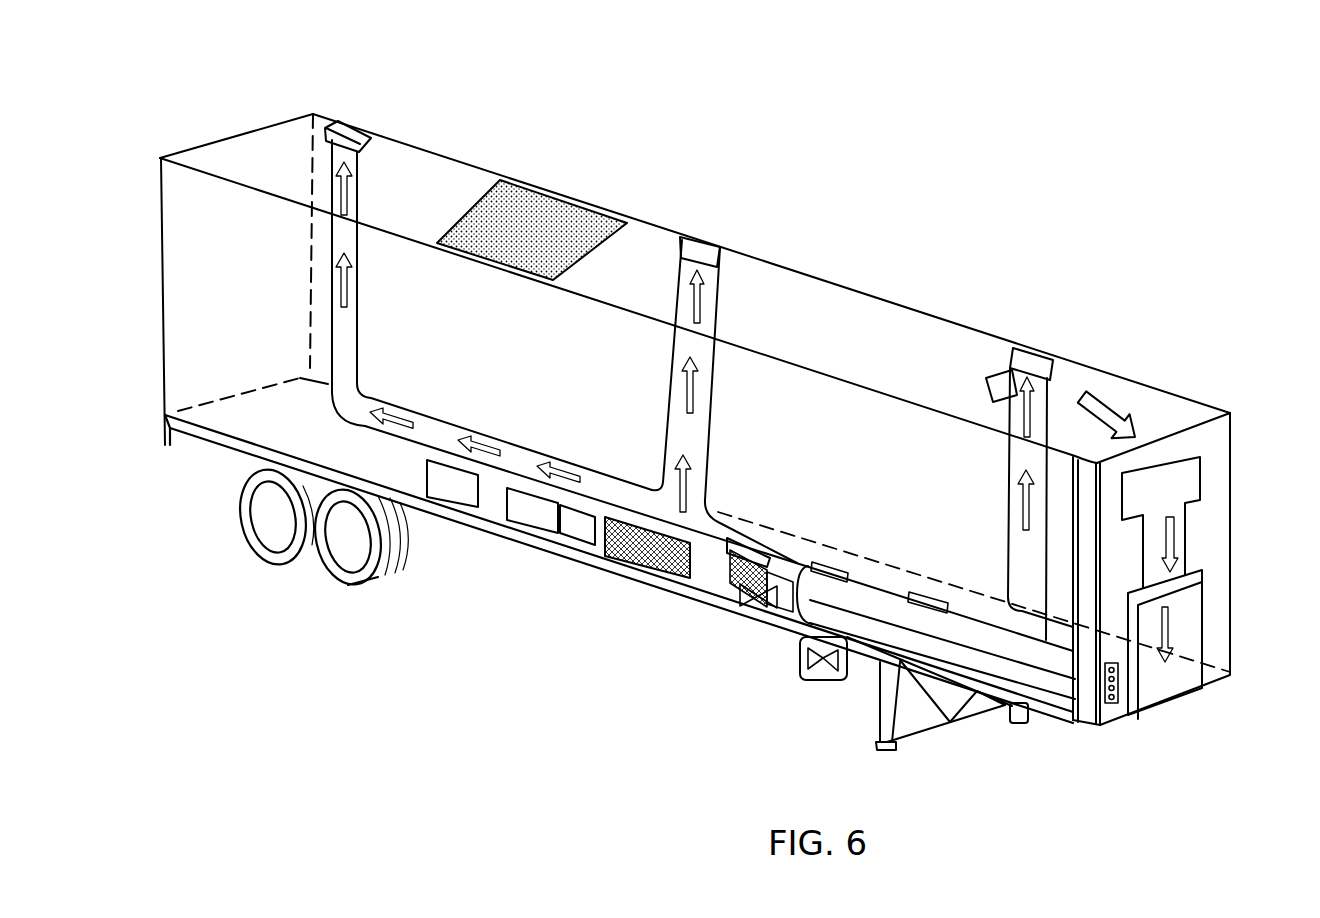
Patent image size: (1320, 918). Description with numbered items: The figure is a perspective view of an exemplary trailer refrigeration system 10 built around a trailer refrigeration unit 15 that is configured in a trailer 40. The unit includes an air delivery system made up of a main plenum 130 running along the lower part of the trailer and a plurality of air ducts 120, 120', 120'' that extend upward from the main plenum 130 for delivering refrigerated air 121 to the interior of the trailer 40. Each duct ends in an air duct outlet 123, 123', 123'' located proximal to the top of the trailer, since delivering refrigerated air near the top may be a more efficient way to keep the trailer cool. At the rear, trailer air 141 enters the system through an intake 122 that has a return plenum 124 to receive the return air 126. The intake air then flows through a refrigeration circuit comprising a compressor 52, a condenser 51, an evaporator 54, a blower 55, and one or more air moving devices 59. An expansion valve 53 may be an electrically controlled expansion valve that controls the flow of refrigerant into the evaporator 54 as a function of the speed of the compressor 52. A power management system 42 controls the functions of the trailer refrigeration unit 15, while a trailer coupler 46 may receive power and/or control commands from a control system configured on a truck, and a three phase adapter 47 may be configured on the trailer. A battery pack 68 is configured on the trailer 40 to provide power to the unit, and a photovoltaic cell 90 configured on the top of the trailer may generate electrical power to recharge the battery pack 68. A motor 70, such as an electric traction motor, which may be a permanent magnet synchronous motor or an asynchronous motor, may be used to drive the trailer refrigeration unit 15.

The trailer refrigeration system 10 is at (779, 178).
The trailer refrigeration unit 15 is at (642, 621).
The trailer 40 is at (808, 293).
The power management system 42 is at (430, 515).
The trailer coupler 46 is at (1112, 703).
The three phase adapter 47 is at (1097, 725).
The condenser 51 is at (800, 665).
The compressor 52 is at (512, 522).
The expansion valve 53 is at (735, 565).
The evaporator 54 is at (745, 600).
The blower 55 is at (772, 612).
The air moving device 59 is at (825, 685).
The battery pack 68 is at (627, 560).
The motor 70 is at (560, 548).
The photovoltaic cell 90 is at (570, 225).
The air duct 120 is at (702, 395).
The air duct 120' is at (726, 401).
The air duct 120'' is at (1015, 504).
The refrigerated air 121 is at (702, 303).
The intake 122 is at (1167, 487).
The air duct outlet 123 is at (361, 103).
The air duct outlet 123' is at (719, 219).
The air duct outlet 123'' is at (1050, 322).
The return plenum 124 is at (1180, 560).
The return air 126 is at (1175, 657).
The main plenum 130 is at (893, 590).
The trailer air 141 is at (1118, 402).